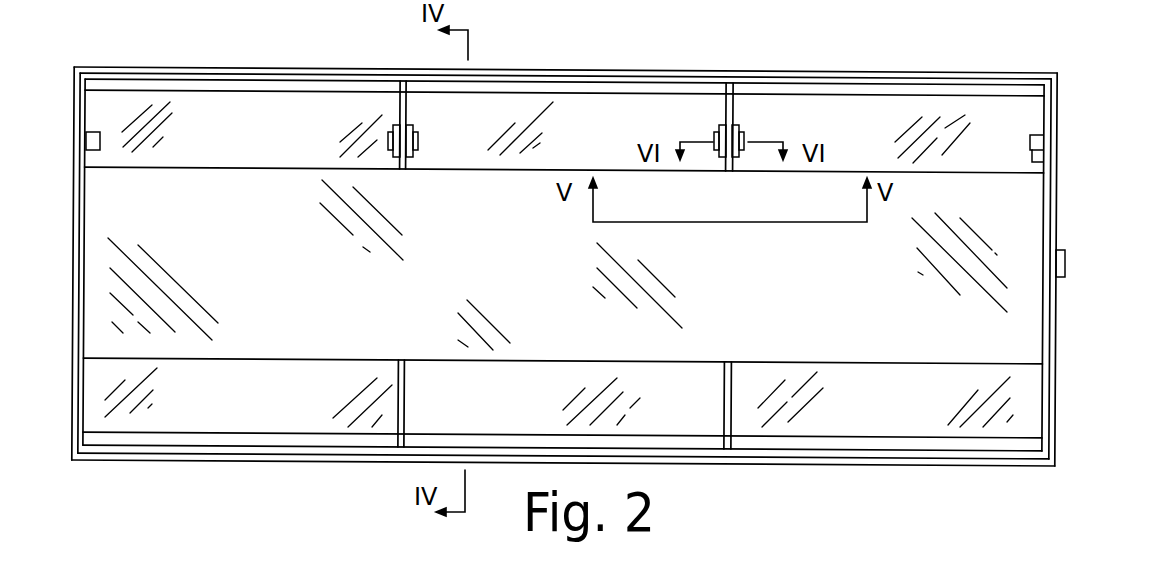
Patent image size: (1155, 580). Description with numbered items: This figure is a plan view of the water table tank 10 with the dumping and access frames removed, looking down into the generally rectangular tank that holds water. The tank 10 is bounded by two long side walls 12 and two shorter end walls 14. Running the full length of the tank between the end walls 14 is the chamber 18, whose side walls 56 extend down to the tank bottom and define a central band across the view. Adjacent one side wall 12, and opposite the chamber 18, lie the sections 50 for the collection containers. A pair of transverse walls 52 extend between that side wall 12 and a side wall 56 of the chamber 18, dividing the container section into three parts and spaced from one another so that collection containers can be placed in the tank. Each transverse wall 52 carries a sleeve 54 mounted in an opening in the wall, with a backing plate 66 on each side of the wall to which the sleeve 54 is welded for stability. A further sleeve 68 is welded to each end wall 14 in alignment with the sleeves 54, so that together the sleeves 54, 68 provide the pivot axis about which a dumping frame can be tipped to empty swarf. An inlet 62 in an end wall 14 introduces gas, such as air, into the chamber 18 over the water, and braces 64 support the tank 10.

The tank 10 is at (1060, 209).
The side walls 12 is at (498, 68).
The end walls 14 is at (72, 307).
The chamber 18 is at (541, 288).
The sections for the collection containers 50 is at (203, 116).
The transverse walls 52 is at (398, 113).
The sleeves 54 is at (745, 138).
The side wall of chamber 56 is at (987, 167).
The inlet 62 is at (1066, 262).
The braces 64 is at (732, 423).
The backing plate 66 is at (742, 136).
The sleeve 68 is at (1046, 160).